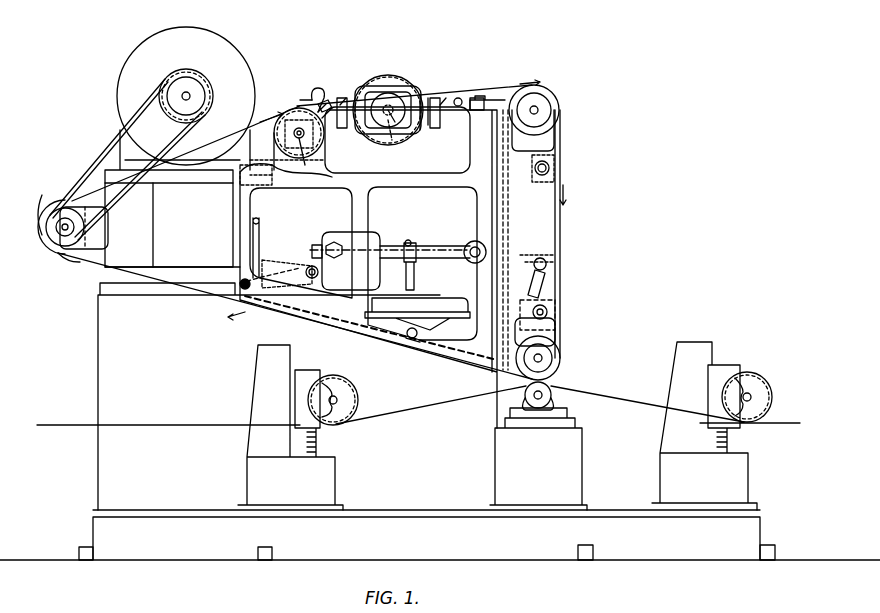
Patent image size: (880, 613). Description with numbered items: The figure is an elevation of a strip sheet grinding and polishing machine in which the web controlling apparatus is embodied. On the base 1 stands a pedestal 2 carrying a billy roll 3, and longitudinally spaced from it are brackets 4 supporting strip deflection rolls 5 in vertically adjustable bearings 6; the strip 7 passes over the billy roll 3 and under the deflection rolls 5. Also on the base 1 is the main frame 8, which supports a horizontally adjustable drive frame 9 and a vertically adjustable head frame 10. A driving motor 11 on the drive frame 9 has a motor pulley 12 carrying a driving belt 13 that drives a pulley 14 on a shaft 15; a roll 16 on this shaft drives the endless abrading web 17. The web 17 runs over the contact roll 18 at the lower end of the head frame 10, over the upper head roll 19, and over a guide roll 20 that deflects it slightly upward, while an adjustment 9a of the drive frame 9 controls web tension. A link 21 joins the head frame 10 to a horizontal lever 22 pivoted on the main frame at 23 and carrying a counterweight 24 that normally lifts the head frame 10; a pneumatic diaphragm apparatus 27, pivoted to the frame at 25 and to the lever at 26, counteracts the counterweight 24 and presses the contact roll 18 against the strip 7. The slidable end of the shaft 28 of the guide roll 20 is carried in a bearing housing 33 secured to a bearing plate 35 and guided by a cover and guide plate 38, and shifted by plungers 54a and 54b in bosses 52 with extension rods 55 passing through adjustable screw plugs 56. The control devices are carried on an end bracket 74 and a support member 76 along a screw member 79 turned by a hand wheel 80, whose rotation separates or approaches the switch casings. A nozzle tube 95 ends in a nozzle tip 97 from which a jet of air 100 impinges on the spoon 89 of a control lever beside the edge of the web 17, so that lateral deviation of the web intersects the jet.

The base 1 is at (527, 552).
The pedestal 2 is at (510, 478).
The billy roll 3 is at (555, 400).
The brackets 4 is at (272, 382).
The strip deflection rolls 5 is at (356, 396).
The bearings 6 is at (336, 418).
The strip 7 is at (430, 410).
The main frame 8 is at (108, 372).
The drive frame 9 is at (177, 198).
The adjustment 9a is at (286, 262).
The head frame 10 is at (544, 206).
The driving motor 11 is at (161, 42).
The motor pulley 12 is at (176, 73).
The driving belt 13 is at (104, 132).
The pulley 14 is at (48, 192).
The shaft 15 is at (62, 232).
The roll 16 is at (82, 262).
The abrading web 17 is at (224, 126).
The contact roll 18 is at (562, 362).
The upper head roll 19 is at (558, 98).
The guide roll 20 is at (398, 74).
The link 21 is at (548, 278).
The lever 22 is at (389, 252).
The pivot 23 is at (474, 246).
The counterweight 24 is at (340, 240).
The pivot connection 25 is at (412, 340).
The pivot connection 26 is at (410, 246).
The diaphragm apparatus 27 is at (438, 308).
The shaft 28 is at (392, 142).
The bearing housing 33 is at (388, 88).
The bearing plate 35 is at (420, 122).
The cover and guide plate 38 is at (435, 174).
The elongated bosses 52 is at (343, 90).
The plunger 54a is at (344, 98).
The plunger 54b is at (432, 98).
The plunger extension rods 55 is at (486, 92).
The adjustable screw plugs 56 is at (458, 100).
The end bracket 74 is at (257, 178).
The support member 76 is at (320, 165).
The screw member 79 is at (338, 176).
The hand wheel 80 is at (290, 158).
The spoon 89 is at (324, 114).
The nozzle tube 95 is at (308, 98).
The nozzle tip 97 is at (318, 88).
The jet of air 100 is at (328, 102).